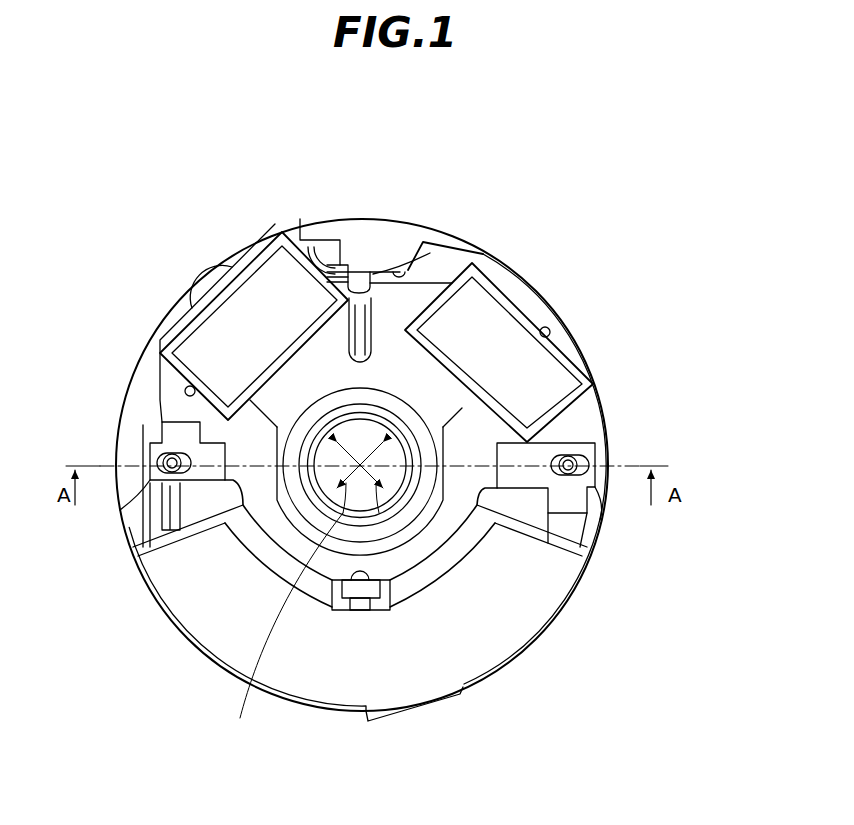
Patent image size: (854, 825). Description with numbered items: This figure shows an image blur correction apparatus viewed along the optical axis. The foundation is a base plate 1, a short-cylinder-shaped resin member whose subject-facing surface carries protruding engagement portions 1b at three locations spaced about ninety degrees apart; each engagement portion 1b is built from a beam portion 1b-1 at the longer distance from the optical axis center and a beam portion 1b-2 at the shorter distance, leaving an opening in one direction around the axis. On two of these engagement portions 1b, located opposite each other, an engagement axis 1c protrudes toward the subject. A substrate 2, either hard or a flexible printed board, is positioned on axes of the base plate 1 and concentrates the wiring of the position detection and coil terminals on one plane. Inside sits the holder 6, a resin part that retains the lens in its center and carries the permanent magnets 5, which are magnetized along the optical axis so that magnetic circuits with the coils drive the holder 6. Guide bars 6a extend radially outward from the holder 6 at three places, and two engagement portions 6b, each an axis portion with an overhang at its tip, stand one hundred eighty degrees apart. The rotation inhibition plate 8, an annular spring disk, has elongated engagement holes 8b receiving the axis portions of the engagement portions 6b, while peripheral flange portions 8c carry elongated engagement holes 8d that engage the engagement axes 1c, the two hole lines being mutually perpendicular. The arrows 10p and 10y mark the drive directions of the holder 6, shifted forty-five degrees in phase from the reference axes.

The base plate 1 is at (417, 233).
The engagement portion 1b is at (362, 227).
The beam portion 1b-1 is at (322, 243).
The beam portion 1b-2 is at (397, 275).
The engagement axis 1c is at (143, 450).
The substrate 2 is at (530, 296).
The permanent magnet 5 is at (270, 270).
The holder 6 is at (270, 563).
The guide bar 6a is at (330, 282).
The engagement portion 6b is at (357, 340).
The rotation inhibition plate 8 is at (570, 445).
The engagement hole 8b is at (380, 345).
The flange portion 8c is at (163, 423).
The engagement hole 8d is at (155, 462).
The arrow 10p is at (379, 508).
The arrow 10y is at (270, 628).